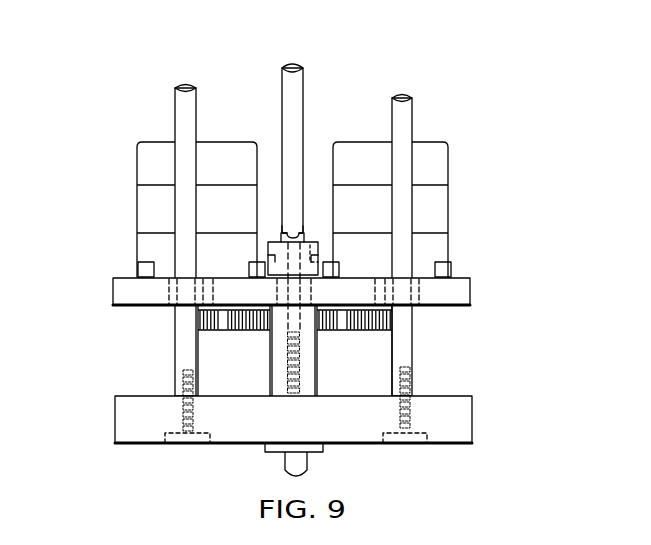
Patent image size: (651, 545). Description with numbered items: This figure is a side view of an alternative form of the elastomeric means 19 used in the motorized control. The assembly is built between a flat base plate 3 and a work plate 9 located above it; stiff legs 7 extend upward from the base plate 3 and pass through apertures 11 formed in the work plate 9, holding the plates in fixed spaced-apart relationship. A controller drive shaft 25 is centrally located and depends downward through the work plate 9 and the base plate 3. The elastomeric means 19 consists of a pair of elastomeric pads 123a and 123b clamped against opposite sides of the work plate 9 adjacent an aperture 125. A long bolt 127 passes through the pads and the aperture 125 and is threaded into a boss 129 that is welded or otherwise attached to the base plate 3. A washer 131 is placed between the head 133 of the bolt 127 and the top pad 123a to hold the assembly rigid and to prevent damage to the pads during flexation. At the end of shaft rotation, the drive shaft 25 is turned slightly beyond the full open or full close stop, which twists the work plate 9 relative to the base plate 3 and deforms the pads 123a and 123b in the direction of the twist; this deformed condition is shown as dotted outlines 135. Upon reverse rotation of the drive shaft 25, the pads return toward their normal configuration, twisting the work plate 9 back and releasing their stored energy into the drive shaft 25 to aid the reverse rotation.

The base plate 3 is at (122, 420).
The legs 7 is at (183, 346).
The work plate 9 is at (117, 303).
The apertures 11 is at (168, 293).
The elastomeric means 19 is at (325, 233).
The controller drive shaft 25 is at (299, 104).
The top elastomeric pad 123a is at (283, 262).
The bottom elastomeric pad 123b is at (305, 338).
The aperture 125 is at (303, 288).
The long bolt 127 is at (310, 262).
The boss 129 is at (273, 368).
The washer 131 is at (280, 233).
The head 133 is at (306, 233).
The dotted outlines 135 is at (268, 243).